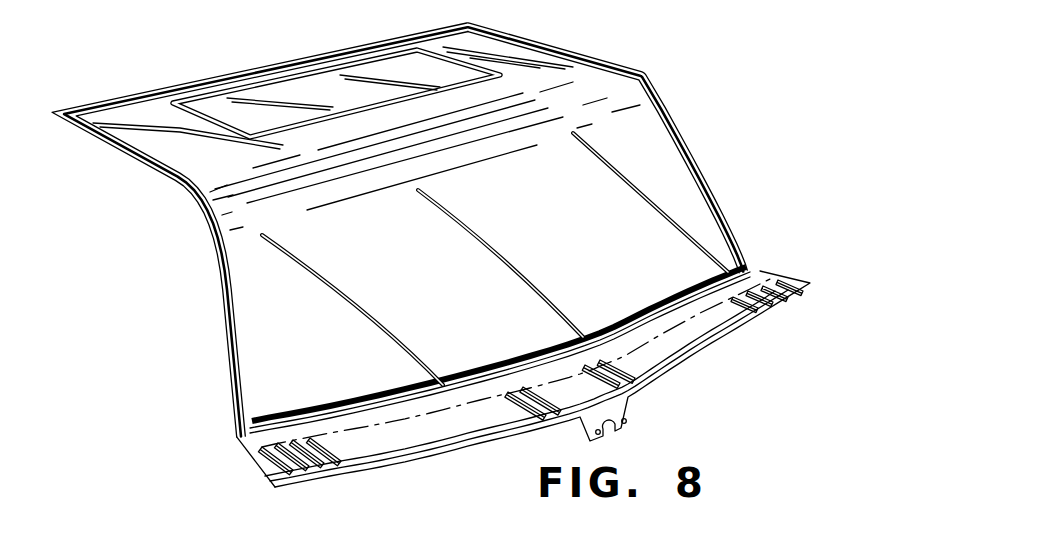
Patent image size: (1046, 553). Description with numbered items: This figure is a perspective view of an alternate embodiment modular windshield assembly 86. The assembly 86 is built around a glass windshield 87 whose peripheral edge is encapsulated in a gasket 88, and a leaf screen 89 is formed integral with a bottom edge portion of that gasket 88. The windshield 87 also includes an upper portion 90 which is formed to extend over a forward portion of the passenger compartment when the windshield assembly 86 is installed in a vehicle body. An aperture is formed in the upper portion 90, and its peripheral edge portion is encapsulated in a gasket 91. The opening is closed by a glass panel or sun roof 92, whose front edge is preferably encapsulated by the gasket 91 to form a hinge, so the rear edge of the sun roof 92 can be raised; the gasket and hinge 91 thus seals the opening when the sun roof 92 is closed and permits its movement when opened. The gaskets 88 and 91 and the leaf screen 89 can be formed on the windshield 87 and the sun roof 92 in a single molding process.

The modular windshield assembly 86 is at (432, 246).
The glass windshield 87 is at (690, 203).
The gasket 88 is at (217, 270).
The leaf screen 89 is at (670, 368).
The upper portion 90 is at (153, 122).
The gasket and hinge 91 is at (477, 63).
The sun roof 92 is at (298, 103).